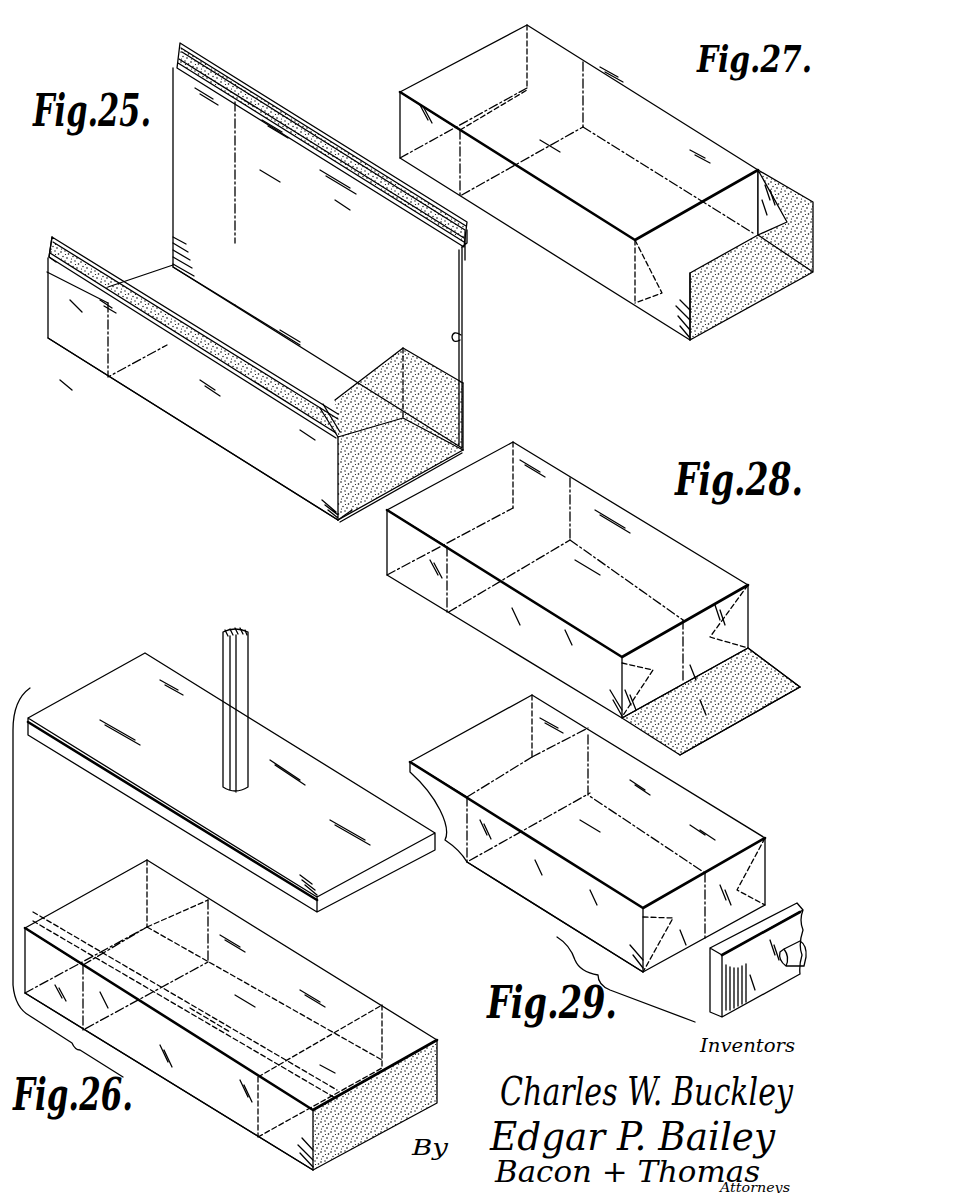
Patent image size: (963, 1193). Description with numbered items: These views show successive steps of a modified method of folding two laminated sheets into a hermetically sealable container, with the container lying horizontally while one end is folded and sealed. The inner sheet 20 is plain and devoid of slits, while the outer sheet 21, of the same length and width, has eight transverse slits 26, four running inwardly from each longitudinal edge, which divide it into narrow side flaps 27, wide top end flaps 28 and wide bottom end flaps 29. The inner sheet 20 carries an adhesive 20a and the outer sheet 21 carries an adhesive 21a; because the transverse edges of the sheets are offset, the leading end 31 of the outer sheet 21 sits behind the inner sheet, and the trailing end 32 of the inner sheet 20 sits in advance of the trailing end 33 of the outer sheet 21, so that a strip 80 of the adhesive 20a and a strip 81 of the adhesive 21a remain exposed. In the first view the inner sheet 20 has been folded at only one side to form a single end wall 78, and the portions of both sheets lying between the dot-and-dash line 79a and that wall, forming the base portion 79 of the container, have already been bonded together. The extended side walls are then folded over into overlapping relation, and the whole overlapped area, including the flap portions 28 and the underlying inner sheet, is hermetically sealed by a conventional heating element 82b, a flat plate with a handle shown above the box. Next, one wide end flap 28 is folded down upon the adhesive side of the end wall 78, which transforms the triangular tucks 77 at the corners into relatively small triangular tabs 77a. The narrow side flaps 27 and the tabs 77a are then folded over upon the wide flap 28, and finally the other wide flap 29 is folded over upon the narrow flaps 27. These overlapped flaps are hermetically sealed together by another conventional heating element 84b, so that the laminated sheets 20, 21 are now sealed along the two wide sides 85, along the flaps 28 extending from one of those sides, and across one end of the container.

In FIG. 25, the inner sheet 20 is at (470, 333).
In FIG. 25, the adhesive on inner sheet 20a is at (60, 241).
In FIG. 25, the outer sheet 21 is at (465, 302).
In FIG. 27, the outer sheet 21 is at (693, 342).
In FIG. 28, the outer sheet 21 is at (765, 670).
In FIG. 25, the adhesive on outer sheet 21a is at (452, 495).
In FIG. 27, the adhesive on outer sheet 21a is at (717, 332).
In FIG. 28, the adhesive on outer sheet 21a is at (713, 740).
In FIG. 26, the adhesive on outer sheet 21a is at (383, 1125).
In FIG. 25, the transverse slits 26 is at (178, 208).
In FIG. 27, the transverse slits 26 is at (432, 92).
In FIG. 28, the transverse slits 26 is at (388, 525).
In FIG. 29, the transverse slits 26 is at (420, 765).
In FIG. 26, the transverse slits 26 is at (45, 928).
In FIG. 25, the side flaps 27 is at (205, 235).
In FIG. 27, the side flaps 27 is at (398, 120).
In FIG. 28, the side flaps 27 is at (418, 585).
In FIG. 29, the side flaps 27 is at (530, 700).
In FIG. 26, the side flaps 27 is at (147, 868).
In FIG. 25, the top end flaps 28 is at (179, 50).
In FIG. 27, the top end flaps 28 is at (490, 57).
In FIG. 28, the top end flaps 28 is at (505, 450).
In FIG. 29, the top end flaps 28 is at (503, 722).
In FIG. 26, the top end flaps 28 is at (96, 893).
In FIG. 25, the bottom end flaps 29 is at (368, 510).
In FIG. 27, the bottom end flaps 29 is at (492, 110).
In FIG. 28, the bottom end flaps 29 is at (750, 712).
In FIG. 29, the bottom end flaps 29 is at (505, 772).
In FIG. 26, the bottom end flaps 29 is at (130, 940).
In FIG. 25, the leading end of outer sheet 31 is at (49, 262).
In FIG. 25, the trailing end of inner sheet 32 is at (298, 114).
In FIG. 25, the trailing end of outer sheet 33 is at (466, 262).
In FIG. 25, the triangular tucks 77 is at (470, 395).
In FIG. 27, the triangular tabs 77a is at (770, 198).
In FIG. 28, the triangular tabs 77a is at (742, 624).
In FIG. 29, the triangular tabs 77a is at (745, 862).
In FIG. 25, the end wall 78 is at (402, 346).
In FIG. 25, the base portion 79 is at (292, 352).
In FIG. 27, the base portion 79 is at (634, 163).
In FIG. 28, the base portion 79 is at (620, 583).
In FIG. 29, the base portion 79 is at (637, 842).
In FIG. 26, the base portion 79 is at (245, 1002).
In FIG. 25, the dot-and-dash line 79a is at (215, 326).
In FIG. 27, the dot-and-dash line 79a is at (578, 92).
In FIG. 28, the dot-and-dash line 79a is at (566, 480).
In FIG. 26, the dot-and-dash line 79a is at (193, 905).
In FIG. 25, the adhesive strip of inner sheet 80 is at (228, 352).
In FIG. 26, the adhesive strip of inner sheet 80 is at (198, 1035).
In FIG. 25, the adhesive strip of outer sheet 81 is at (258, 100).
In FIG. 26, the adhesive strip of outer sheet 81 is at (185, 1020).
In FIG. 26, the heating element 82b is at (310, 768).
In FIG. 29, the heating element 84b is at (776, 920).
In FIG. 25, the sides of container 85 is at (196, 420).
In FIG. 29, the sides of container 85 is at (690, 798).
In FIG. 26, the sides of container 85 is at (210, 1100).